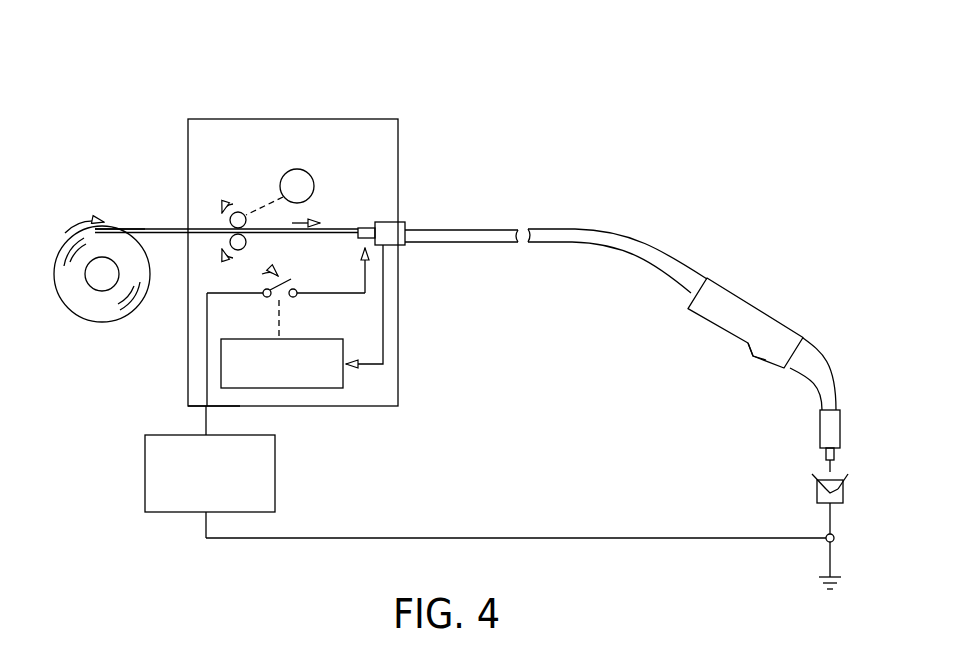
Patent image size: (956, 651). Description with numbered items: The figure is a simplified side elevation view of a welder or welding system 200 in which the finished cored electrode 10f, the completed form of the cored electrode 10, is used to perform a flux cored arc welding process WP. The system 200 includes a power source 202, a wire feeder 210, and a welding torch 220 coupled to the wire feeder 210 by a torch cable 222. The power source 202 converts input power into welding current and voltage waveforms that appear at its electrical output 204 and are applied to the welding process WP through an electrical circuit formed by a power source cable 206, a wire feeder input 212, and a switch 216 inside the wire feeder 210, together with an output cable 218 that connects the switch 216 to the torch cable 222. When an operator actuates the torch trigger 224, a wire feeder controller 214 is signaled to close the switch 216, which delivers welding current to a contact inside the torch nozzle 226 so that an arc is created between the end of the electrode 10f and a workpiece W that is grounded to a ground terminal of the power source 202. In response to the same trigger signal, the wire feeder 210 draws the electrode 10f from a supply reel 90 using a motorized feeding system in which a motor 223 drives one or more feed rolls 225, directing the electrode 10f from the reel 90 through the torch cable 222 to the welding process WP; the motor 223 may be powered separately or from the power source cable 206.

The welding system 200 is at (659, 144).
The wire feeder 210 is at (359, 117).
The motor 223 is at (314, 182).
The feed rolls 225 is at (222, 204).
The cored electrode 10 is at (172, 226).
The finished cored electrode 10f is at (141, 222).
The supply reel 90 is at (98, 322).
The torch cable 222 is at (457, 228).
The welding torch 220 is at (739, 289).
The torch trigger 224 is at (752, 355).
The torch nozzle 226 is at (818, 427).
The workpiece W is at (813, 478).
The welding process WP is at (806, 493).
The power source 202 is at (170, 512).
The electrical output 204 is at (196, 429).
The power source cable 206 is at (207, 358).
The wire feeder input 212 is at (218, 410).
The wire feeder controller 214 is at (320, 388).
The switch 216 is at (300, 282).
The output cable 218 is at (366, 285).